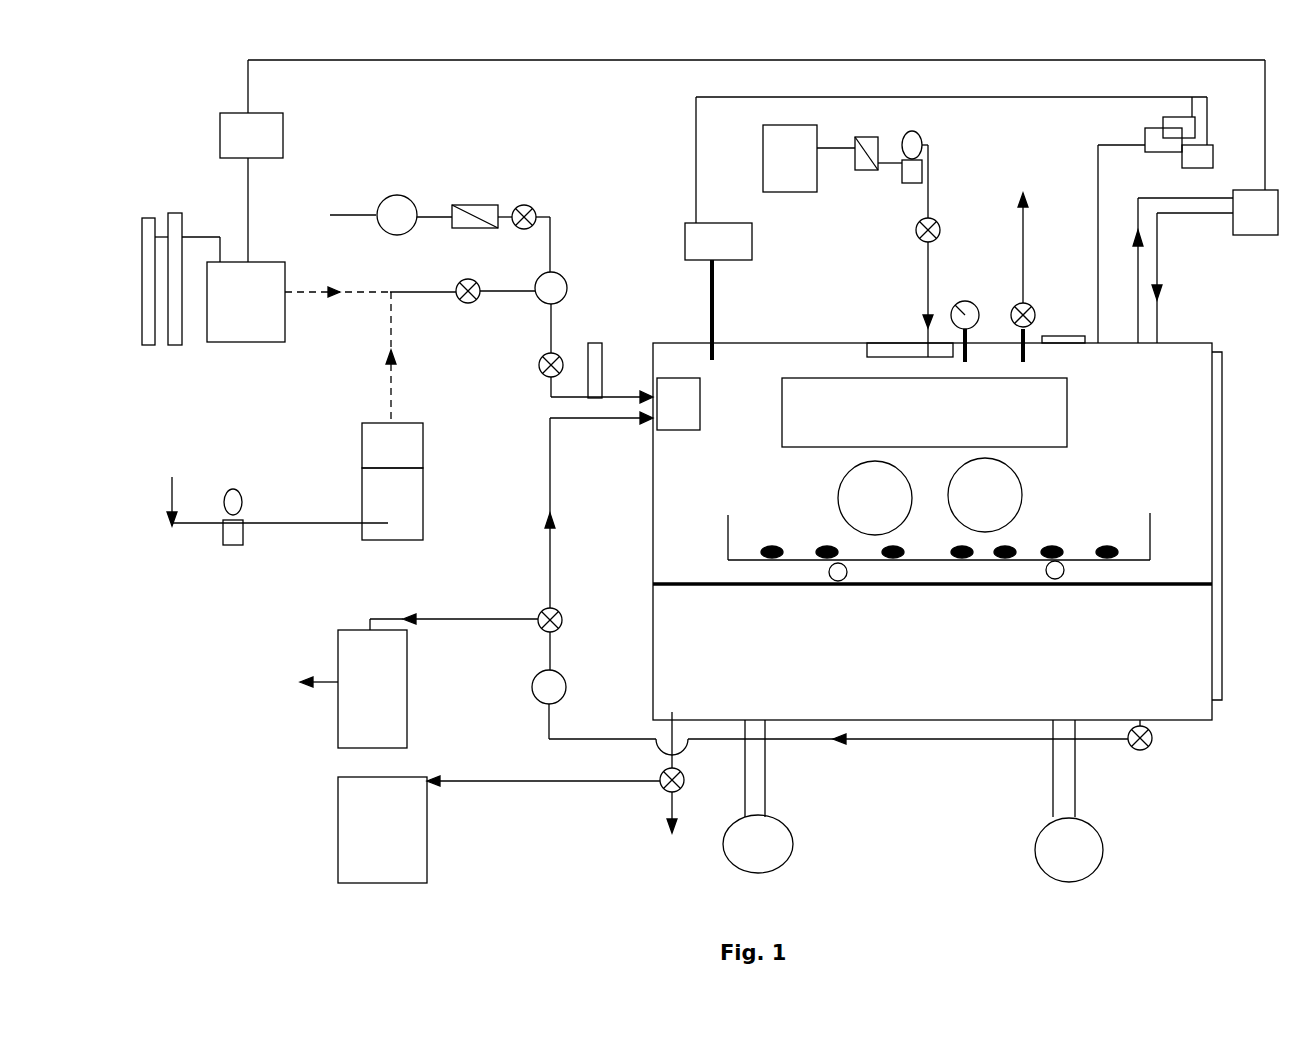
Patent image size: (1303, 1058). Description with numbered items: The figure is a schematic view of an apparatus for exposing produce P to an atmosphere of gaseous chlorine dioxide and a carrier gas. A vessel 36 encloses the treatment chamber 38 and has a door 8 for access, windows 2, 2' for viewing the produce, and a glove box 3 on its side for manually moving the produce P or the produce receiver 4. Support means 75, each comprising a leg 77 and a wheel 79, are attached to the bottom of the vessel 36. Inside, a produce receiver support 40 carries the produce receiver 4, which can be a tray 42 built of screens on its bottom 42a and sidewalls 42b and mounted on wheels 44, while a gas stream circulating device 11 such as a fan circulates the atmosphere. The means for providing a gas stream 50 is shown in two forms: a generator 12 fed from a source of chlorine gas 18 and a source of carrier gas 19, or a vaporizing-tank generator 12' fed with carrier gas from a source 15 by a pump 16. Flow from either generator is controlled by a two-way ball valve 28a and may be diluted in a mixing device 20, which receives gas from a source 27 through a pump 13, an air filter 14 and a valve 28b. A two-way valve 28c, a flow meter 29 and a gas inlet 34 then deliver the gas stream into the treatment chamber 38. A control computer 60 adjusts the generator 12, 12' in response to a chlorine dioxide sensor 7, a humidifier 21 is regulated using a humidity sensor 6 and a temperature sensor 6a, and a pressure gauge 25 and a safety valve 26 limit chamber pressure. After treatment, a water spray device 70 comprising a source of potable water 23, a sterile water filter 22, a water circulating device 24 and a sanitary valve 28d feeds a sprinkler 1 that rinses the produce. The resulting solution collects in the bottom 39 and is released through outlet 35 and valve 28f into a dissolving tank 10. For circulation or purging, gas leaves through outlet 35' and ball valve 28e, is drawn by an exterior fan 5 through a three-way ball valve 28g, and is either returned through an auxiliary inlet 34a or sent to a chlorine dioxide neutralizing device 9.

The sprinkler 1 is at (895, 355).
The window 2 is at (1063, 322).
The window 2' is at (924, 412).
The glove box 3 is at (942, 486).
The produce receiver 4 is at (720, 548).
The exterior fan 5 is at (566, 686).
The humidity sensor 6 is at (1200, 168).
The temperature sensor 6a is at (1195, 128).
The chlorine dioxide sensor 7 is at (1278, 218).
The door 8 is at (1222, 541).
The chlorine dioxide neutralizing device 9 is at (407, 676).
The dissolving tank 10 is at (427, 838).
The gas stream circulating device 11 is at (690, 414).
The generator 12 is at (246, 302).
The generator 12' is at (392, 481).
The pump 13 is at (380, 204).
The air filter 14 is at (474, 205).
The source of a carrier gas 15 is at (274, 482).
The pump 16 is at (252, 482).
The source of chlorine gas 18 is at (142, 232).
The source of a carrier gas 19 is at (196, 214).
The mixing device 20 is at (566, 297).
The humidifier 21 is at (724, 251).
The sterile water filter 22 is at (872, 136).
The source of potable water 23 is at (802, 159).
The water circulating device 24 is at (928, 136).
The pressure gauge 25 is at (980, 302).
The safety valve 26 is at (1030, 300).
The source of gas 27 is at (338, 215).
The two-way stainless steel ball valve 28a is at (468, 303).
The two or three-way valve 28b is at (523, 205).
The two-way valve 28c is at (540, 381).
The two-way sanitary valve 28d is at (918, 240).
The ball valve 28e is at (1148, 750).
The valve 28f is at (664, 794).
The three-way ball valve 28g is at (562, 622).
The flow meter 29 is at (608, 352).
The gas inlet 34 is at (650, 392).
The auxiliary inlet 34a is at (648, 429).
The outlet 35 is at (689, 729).
The outlet 35' is at (1134, 699).
The vessel 36 is at (750, 335).
The treatment chamber 38 is at (1136, 411).
The bottom 39 is at (907, 714).
The produce receiver support 40 is at (978, 586).
The tray 42 is at (1152, 560).
The bottom 42a is at (728, 529).
The sidewalls 42b is at (802, 560).
The wheels 44 is at (838, 581).
The means for providing a gas stream 50 is at (354, 445).
The control computer 60 is at (264, 143).
The water spray device 70 is at (940, 195).
The support means 75 is at (780, 806).
The leg 77 is at (745, 776).
The wheel 79 is at (724, 856).
The produce P is at (1110, 544).